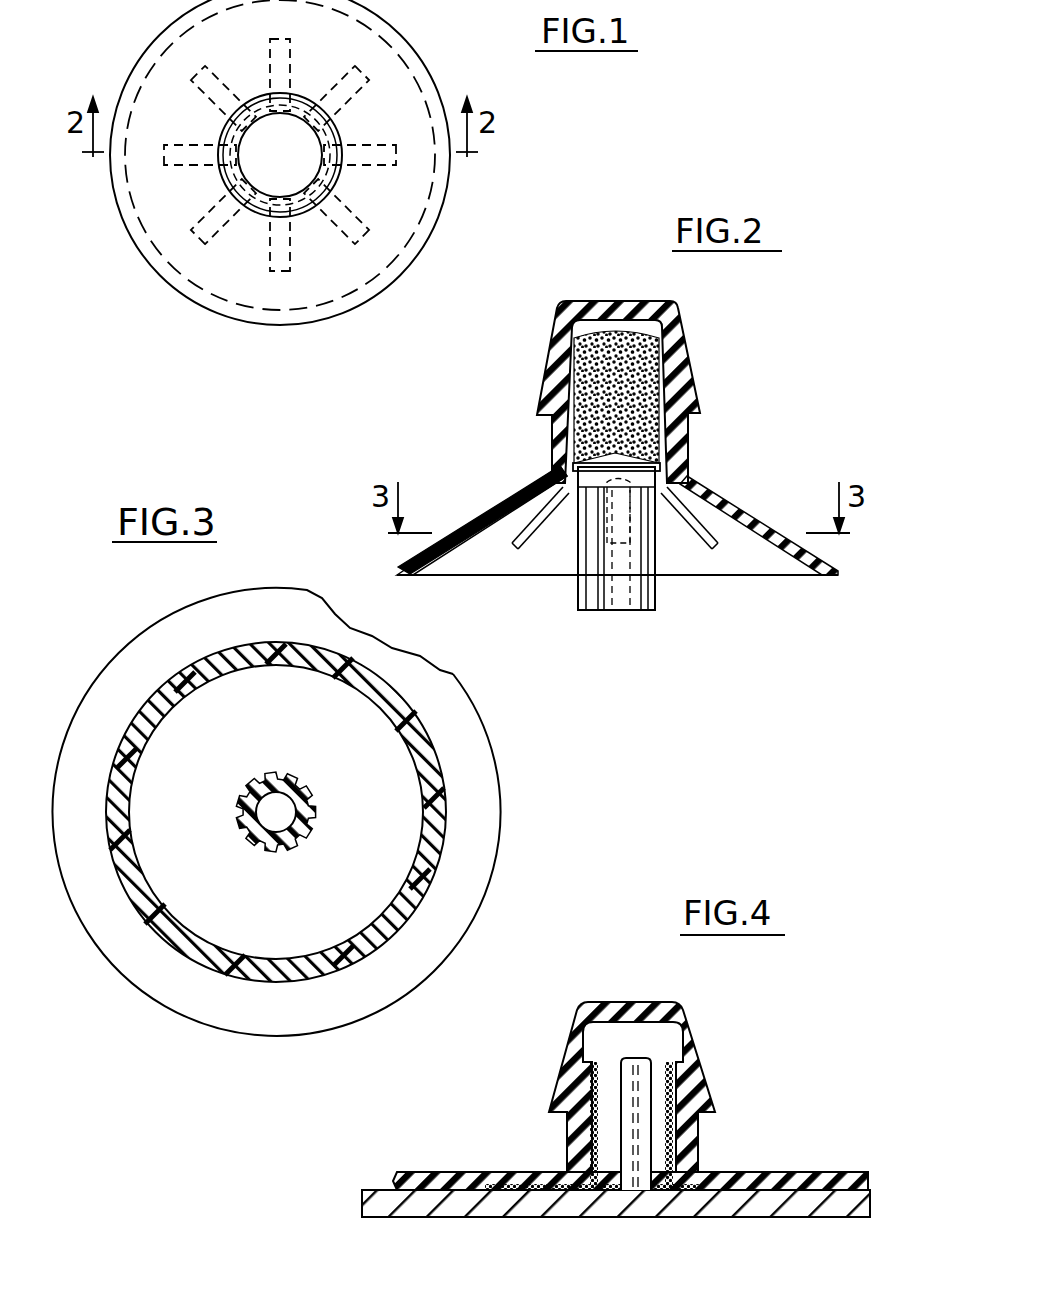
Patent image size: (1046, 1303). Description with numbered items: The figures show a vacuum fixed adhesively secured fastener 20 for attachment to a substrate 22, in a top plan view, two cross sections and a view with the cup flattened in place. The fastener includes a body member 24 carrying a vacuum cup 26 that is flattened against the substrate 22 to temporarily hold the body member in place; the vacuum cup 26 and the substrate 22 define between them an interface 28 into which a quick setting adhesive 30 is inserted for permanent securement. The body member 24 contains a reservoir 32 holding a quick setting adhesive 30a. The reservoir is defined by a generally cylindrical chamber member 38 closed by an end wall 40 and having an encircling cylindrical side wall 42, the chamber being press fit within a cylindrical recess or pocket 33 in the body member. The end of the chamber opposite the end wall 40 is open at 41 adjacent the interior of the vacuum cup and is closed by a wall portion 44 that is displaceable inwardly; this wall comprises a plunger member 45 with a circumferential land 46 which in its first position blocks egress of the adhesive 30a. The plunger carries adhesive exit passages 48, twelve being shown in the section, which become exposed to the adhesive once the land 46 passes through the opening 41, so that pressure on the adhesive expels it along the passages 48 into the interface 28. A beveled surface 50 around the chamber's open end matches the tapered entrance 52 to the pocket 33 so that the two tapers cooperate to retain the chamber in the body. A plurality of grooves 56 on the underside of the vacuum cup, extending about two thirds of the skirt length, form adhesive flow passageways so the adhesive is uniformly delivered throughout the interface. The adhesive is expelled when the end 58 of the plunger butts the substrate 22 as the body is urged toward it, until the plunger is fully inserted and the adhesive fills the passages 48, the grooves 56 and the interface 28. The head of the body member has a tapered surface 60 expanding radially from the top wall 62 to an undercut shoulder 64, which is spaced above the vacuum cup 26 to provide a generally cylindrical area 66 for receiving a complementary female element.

In FIG. 1, the vacuum fixed adhesively secured fastener 20 is at (342, 124).
In FIG. 2, the vacuum fixed adhesively secured fastener 20 is at (681, 331).
In FIG. 4, the vacuum fixed adhesively secured fastener 20 is at (706, 1022).
In FIG. 4, the substrate 22 is at (362, 1210).
In FIG. 1, the body member 24 is at (228, 126).
In FIG. 2, the body member 24 is at (686, 383).
In FIG. 1, the vacuum cup 26 is at (393, 70).
In FIG. 2, the vacuum cup 26 is at (718, 497).
In FIG. 3, the vacuum cup 26 is at (481, 766).
In FIG. 4, the vacuum cup 26 is at (437, 1173).
In FIG. 4, the interface 28 is at (424, 1187).
In FIG. 4, the quick setting adhesive 30 is at (494, 1184).
In FIG. 2, the quick setting adhesive 30a is at (588, 383).
In FIG. 2, the reservoir 32 is at (586, 371).
In FIG. 2, the cylindrical recess or pocket 33 is at (667, 363).
In FIG. 2, the chamber member 38 is at (575, 329).
In FIG. 2, the end wall 40 is at (594, 328).
In FIG. 2, the open end 41 is at (560, 481).
In FIG. 2, the cylindrical side wall 42 is at (568, 398).
In FIG. 2, the wall portion 44 is at (657, 462).
In FIG. 2, the plunger member 45 is at (572, 550).
In FIG. 2, the circumferential land 46 is at (588, 470).
In FIG. 2, the adhesive exit passages 48 is at (652, 557).
In FIG. 3, the adhesive exit passages 48 is at (314, 812).
In FIG. 4, the adhesive exit passages 48 is at (631, 1124).
In FIG. 2, the beveled surface 50 is at (578, 464).
In FIG. 2, the entrance 52 is at (662, 484).
In FIG. 1, the grooves 56 is at (221, 222).
In FIG. 2, the grooves 56 is at (548, 545).
In FIG. 3, the grooves 56 is at (374, 703).
In FIG. 2, the end of the plunger 58 is at (647, 611).
In FIG. 4, the tapered surface 60 is at (566, 1030).
In FIG. 4, the top wall 62 is at (626, 1002).
In FIG. 4, the undercut shoulder 64 is at (708, 1118).
In FIG. 4, the generally cylindrical area 66 is at (700, 1143).